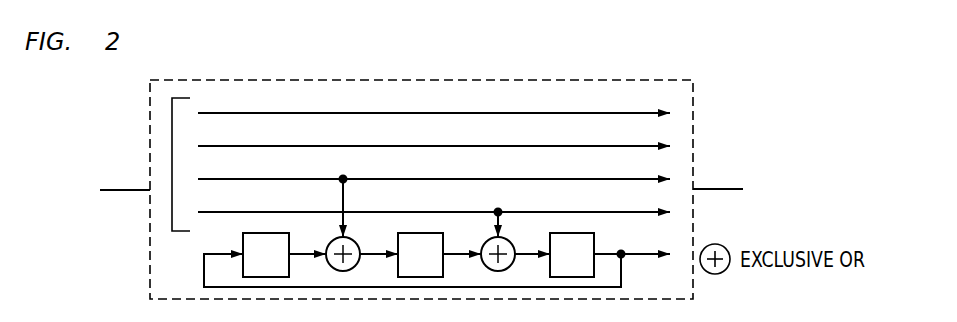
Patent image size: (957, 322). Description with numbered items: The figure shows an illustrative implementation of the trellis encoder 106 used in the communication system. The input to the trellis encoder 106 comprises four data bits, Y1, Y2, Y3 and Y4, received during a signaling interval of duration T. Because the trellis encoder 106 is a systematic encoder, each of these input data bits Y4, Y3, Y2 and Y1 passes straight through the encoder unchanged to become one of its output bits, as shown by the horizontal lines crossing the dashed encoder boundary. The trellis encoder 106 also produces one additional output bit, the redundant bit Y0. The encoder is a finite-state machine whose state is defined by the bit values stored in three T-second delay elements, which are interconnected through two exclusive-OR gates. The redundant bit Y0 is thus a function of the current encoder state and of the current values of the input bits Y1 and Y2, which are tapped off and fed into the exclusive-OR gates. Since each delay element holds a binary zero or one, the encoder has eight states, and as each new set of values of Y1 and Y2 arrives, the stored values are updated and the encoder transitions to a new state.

The trellis encoder 106 is at (421, 175).
The data bit Y4 is at (434, 100).
The data bit Y3 is at (434, 133).
The data bit Y2 is at (434, 195).
The data bit Y1 is at (434, 212).
The redundant bit Y0 is at (632, 243).